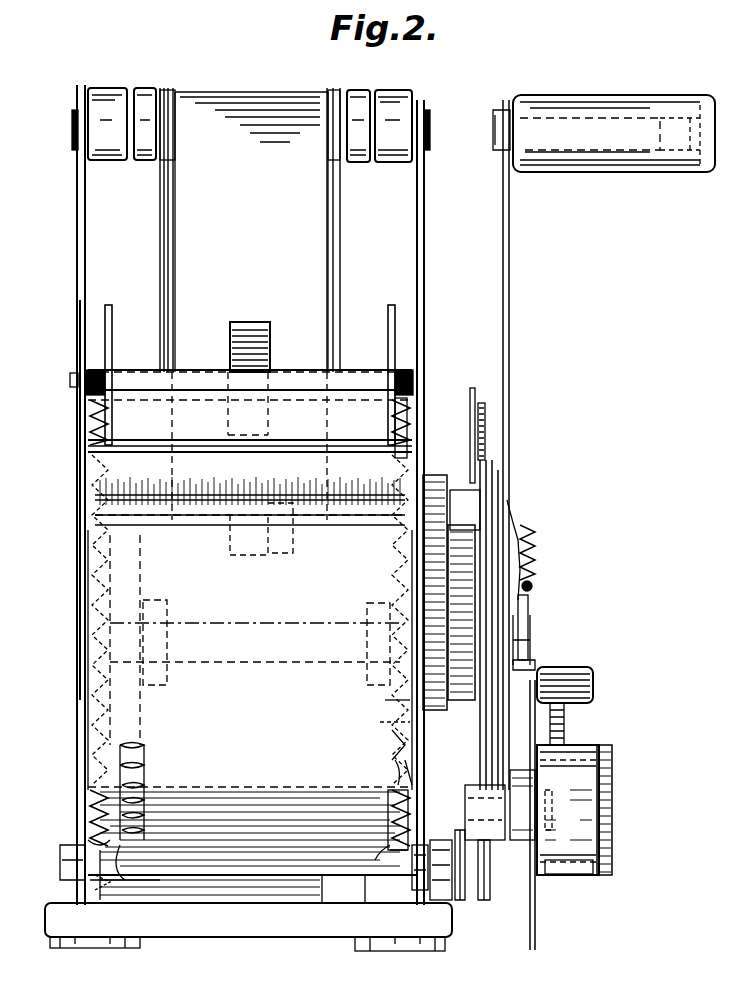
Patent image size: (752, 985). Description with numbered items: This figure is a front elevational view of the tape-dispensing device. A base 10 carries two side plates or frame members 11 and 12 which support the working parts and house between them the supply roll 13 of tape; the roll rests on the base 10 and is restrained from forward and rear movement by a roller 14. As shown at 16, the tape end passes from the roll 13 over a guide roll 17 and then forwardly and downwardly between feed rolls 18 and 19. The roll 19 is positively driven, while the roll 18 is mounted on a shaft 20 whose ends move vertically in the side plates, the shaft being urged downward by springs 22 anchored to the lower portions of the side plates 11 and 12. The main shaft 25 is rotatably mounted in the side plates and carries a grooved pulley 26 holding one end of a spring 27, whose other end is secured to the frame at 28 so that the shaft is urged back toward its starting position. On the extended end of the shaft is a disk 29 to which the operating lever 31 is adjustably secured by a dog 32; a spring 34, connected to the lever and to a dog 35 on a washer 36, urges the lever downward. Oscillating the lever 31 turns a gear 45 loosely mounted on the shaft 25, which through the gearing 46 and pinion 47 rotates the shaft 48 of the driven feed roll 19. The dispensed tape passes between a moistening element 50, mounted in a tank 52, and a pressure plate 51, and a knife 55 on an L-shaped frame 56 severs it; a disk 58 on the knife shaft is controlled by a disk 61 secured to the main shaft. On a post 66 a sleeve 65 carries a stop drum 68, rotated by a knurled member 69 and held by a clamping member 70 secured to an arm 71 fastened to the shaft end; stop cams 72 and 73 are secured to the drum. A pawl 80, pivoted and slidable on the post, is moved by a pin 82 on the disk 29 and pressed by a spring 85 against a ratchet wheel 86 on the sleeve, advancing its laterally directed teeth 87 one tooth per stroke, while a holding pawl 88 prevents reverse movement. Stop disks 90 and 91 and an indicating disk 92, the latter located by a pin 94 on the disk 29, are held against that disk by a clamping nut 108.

The base 10 is at (182, 935).
The side plate 11 is at (424, 238).
The side plate 12 is at (80, 228).
The supply roll 13 is at (248, 890).
The roller 14 is at (210, 800).
The tape end 16 is at (322, 266).
The guide roll 17 is at (166, 92).
The feed roll 18 is at (243, 322).
The feed roll 19 is at (280, 552).
The shaft 20 is at (70, 379).
The springs 22 is at (412, 430).
The main shaft 25 is at (210, 625).
The grooved pulley 26 is at (145, 580).
The spring 27 is at (144, 806).
The frame anchor point 28 is at (130, 890).
The disk 29 is at (478, 405).
The operating lever 31 is at (510, 318).
The dog 32 is at (490, 448).
The spring 34 is at (536, 552).
The dog 35 is at (533, 584).
The washer 36 is at (528, 603).
The gear 45 is at (475, 530).
The gearing 46 is at (423, 573).
The pinion 47 is at (438, 476).
The shaft 48 is at (465, 510).
The moistening element 50 is at (198, 495).
The pressure plate 51 is at (160, 442).
The tank 52 is at (255, 718).
The knife 55 is at (190, 400).
The L-shaped frame 56 is at (112, 320).
The disk 58 is at (395, 428).
The disk 61 is at (380, 725).
The sleeve 65 is at (500, 838).
The post 66 is at (388, 822).
The stop drum 68 is at (612, 775).
The knurled member 69 is at (602, 748).
The clamping member 70 is at (578, 875).
The arm 71 is at (593, 695).
The stop cam 72 is at (505, 815).
The stop cam 73 is at (535, 940).
The pawl 80 is at (385, 704).
The pin 82 is at (392, 742).
The spring 85 is at (395, 775).
The ratchet wheel 86 is at (442, 900).
The teeth 87 is at (460, 902).
The holding pawl 88 is at (418, 892).
The stop disk 90 is at (482, 475).
The stop disk 91 is at (488, 490).
The indicating disk 92 is at (530, 628).
The pin 94 is at (484, 902).
The clamping nut 108 is at (565, 723).